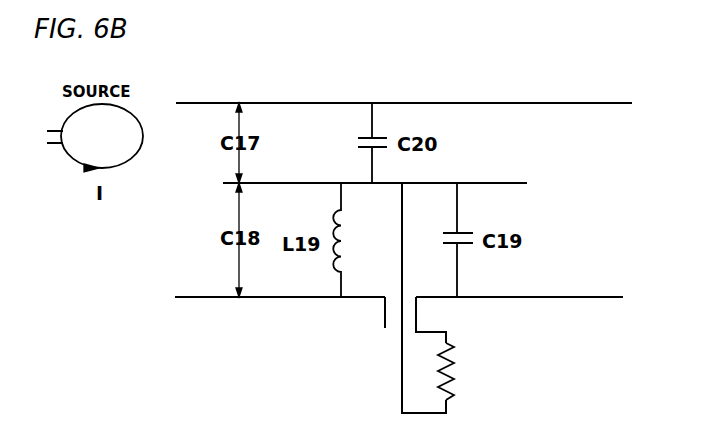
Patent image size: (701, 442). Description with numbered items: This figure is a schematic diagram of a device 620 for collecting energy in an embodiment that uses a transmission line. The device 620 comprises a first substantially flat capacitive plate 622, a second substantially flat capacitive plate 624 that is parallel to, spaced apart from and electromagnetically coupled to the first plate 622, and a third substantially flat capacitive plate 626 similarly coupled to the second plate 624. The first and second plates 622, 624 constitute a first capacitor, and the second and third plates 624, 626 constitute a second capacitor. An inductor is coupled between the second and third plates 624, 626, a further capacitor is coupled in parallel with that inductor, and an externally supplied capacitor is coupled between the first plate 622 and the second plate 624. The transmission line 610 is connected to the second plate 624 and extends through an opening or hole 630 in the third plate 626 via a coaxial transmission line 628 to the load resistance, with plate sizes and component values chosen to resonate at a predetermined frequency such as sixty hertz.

The transmission line 610 is at (400, 361).
The device for collecting energy 620 is at (290, 87).
The first substantially flat capacitive plate 622 is at (583, 103).
The second substantially flat capacitive plate 624 is at (507, 183).
The third substantially flat capacitive plate 626 is at (203, 299).
The coaxial transmission line 628 is at (383, 305).
The opening or hole 630 is at (407, 298).